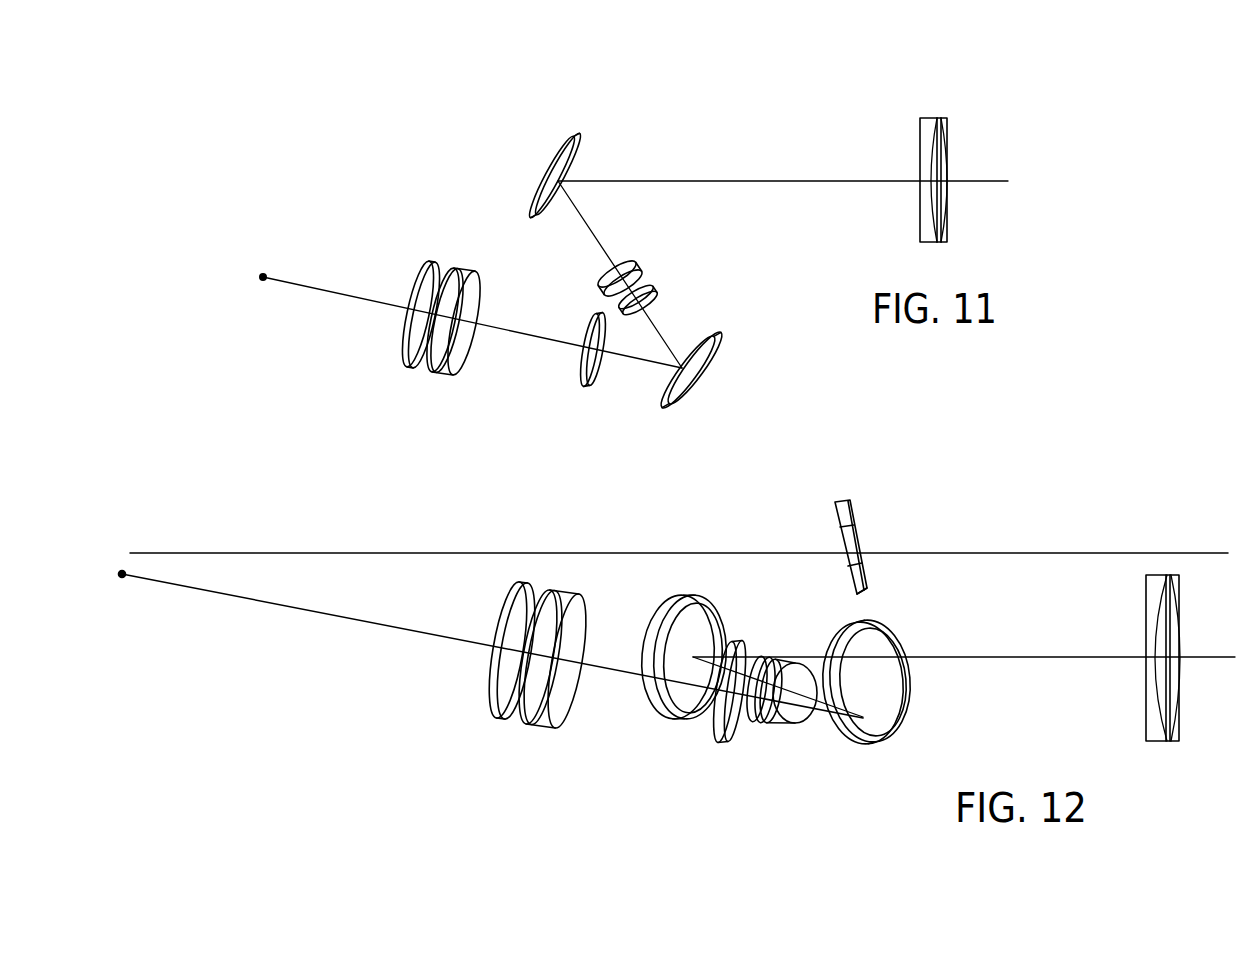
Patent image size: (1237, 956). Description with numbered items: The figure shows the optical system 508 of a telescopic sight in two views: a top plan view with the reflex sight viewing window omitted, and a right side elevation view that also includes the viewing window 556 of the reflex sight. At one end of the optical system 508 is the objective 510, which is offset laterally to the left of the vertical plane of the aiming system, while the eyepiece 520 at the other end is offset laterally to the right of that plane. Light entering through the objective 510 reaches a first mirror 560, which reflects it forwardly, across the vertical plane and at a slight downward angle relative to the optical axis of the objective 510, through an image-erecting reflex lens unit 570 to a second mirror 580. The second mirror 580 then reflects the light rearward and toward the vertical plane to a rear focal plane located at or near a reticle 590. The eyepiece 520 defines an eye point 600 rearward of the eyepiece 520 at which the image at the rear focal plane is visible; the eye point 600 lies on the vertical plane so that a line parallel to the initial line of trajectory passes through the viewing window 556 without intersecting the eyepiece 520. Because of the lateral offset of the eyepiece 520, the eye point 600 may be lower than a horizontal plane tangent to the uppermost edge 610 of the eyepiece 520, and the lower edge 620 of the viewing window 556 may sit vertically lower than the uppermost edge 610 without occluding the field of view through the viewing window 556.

In FIG. 11, the optical system 508 is at (772, 89).
In FIG. 12, the optical system 508 is at (664, 782).
In FIG. 11, the objective 510 is at (928, 120).
In FIG. 12, the objective 510 is at (1160, 737).
In FIG. 11, the eyepiece 520 is at (468, 382).
In FIG. 12, the eyepiece 520 is at (538, 645).
In FIG. 12, the viewing window 556 is at (852, 512).
In FIG. 11, the first mirror 560 is at (581, 143).
In FIG. 12, the first mirror 560 is at (662, 706).
In FIG. 11, the image-erecting reflex lens unit 570 is at (642, 248).
In FIG. 12, the image-erecting reflex lens unit 570 is at (803, 730).
In FIG. 11, the second mirror 580 is at (680, 409).
In FIG. 12, the second mirror 580 is at (877, 708).
In FIG. 11, the reticle 590 is at (584, 388).
In FIG. 12, the reticle 590 is at (726, 744).
In FIG. 11, the eye point 600 is at (265, 287).
In FIG. 12, the eye point 600 is at (125, 583).
In FIG. 12, the uppermost edge 610 is at (519, 578).
In FIG. 12, the lower edge 620 is at (862, 594).